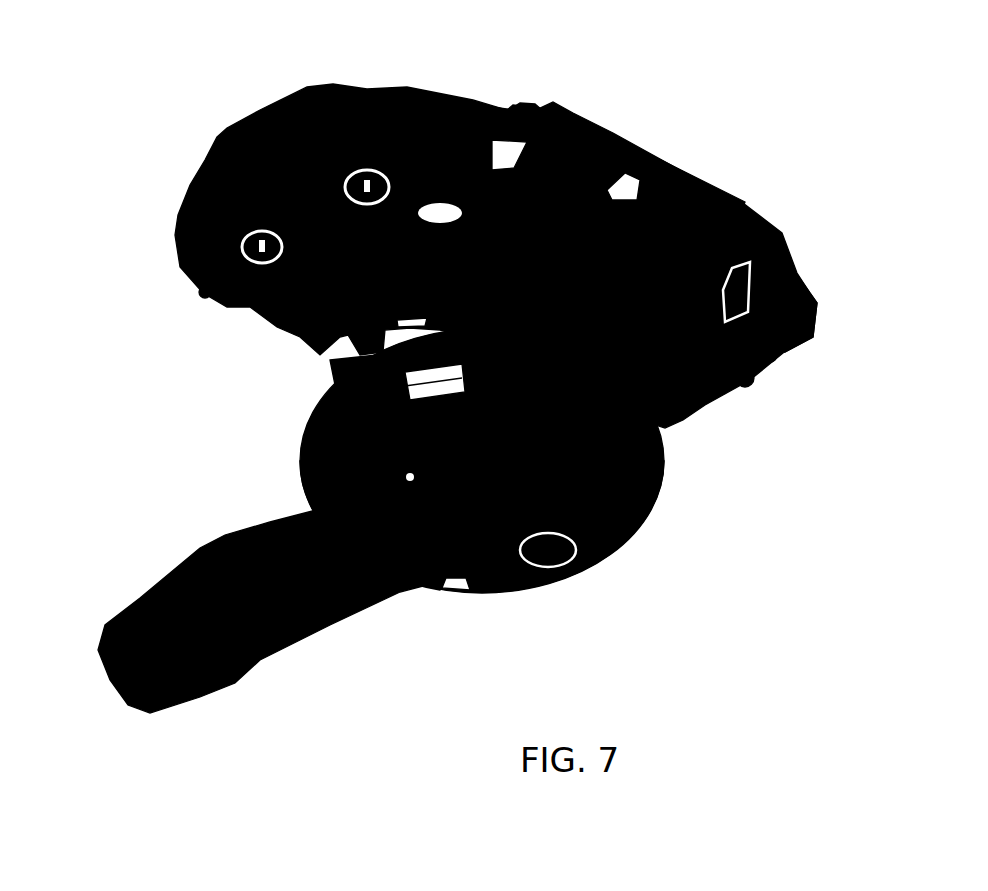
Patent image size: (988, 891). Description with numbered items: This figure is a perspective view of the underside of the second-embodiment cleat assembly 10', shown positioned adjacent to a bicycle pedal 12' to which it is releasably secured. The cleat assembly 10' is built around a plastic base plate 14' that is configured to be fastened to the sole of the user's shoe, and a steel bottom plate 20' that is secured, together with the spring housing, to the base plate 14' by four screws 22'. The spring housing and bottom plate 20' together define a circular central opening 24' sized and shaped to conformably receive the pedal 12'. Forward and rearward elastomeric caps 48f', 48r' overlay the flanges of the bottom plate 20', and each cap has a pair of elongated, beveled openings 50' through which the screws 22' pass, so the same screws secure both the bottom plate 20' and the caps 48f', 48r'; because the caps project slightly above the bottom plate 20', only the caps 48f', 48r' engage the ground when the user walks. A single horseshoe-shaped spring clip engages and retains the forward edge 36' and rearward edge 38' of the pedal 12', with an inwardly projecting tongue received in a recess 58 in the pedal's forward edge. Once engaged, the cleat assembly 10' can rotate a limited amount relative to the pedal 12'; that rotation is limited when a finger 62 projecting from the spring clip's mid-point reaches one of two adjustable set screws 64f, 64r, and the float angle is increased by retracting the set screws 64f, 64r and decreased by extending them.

The cleat assembly 10' is at (421, 256).
The pedal 12' is at (249, 588).
The base plate 14' is at (501, 108).
The bottom plate 20' is at (751, 279).
The screws 22' is at (443, 285).
The central opening 24' is at (650, 140).
The forward edge 36' is at (447, 461).
The rearward edge 38' is at (509, 526).
The forward cap 48f' is at (395, 84).
The rearward cap 48r' is at (838, 308).
The beveled openings 50' is at (496, 220).
The recess 58 is at (335, 360).
The finger 62 is at (642, 160).
The forward set screw 64f is at (530, 115).
The rearward set screw 64r is at (780, 232).